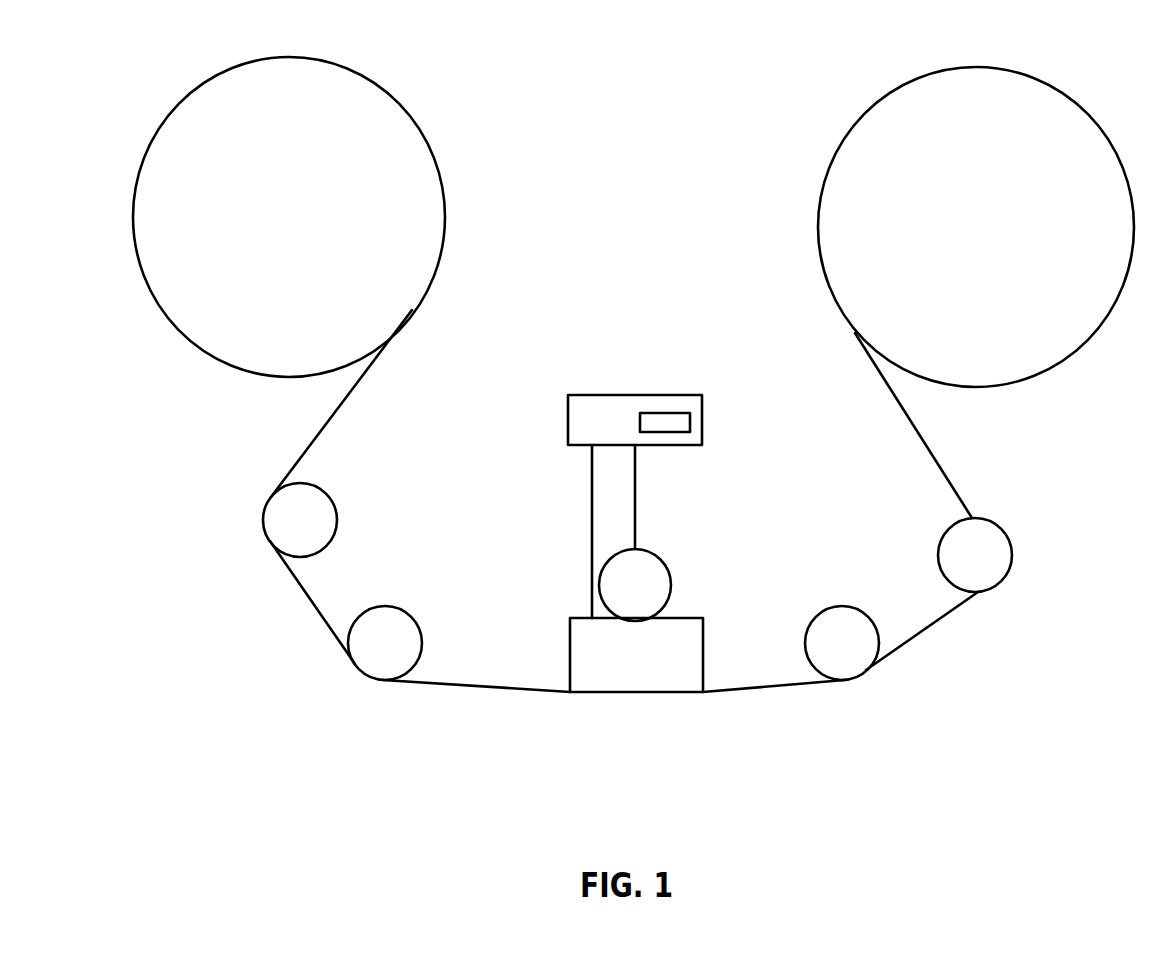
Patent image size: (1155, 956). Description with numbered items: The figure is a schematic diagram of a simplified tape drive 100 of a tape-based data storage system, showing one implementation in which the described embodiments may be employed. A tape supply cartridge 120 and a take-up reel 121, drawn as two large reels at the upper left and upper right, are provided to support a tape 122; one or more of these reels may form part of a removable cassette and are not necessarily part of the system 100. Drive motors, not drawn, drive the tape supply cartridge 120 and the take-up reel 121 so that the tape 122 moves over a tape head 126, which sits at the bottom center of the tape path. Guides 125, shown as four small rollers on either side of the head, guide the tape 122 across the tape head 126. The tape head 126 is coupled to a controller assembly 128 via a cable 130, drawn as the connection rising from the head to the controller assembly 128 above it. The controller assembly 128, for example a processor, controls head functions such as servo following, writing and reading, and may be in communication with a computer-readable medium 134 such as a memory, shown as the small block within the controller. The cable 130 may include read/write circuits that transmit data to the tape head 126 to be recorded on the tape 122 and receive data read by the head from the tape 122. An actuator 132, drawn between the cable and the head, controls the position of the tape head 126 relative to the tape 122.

The tape drive 100 is at (238, 433).
The tape supply cartridge 120 is at (443, 183).
The take-up reel 121 is at (1073, 355).
The tape 122 is at (481, 687).
The guides 125 is at (385, 607).
The tape head 126 is at (706, 655).
The controller assembly 128 is at (633, 395).
The cable 130 is at (592, 580).
The actuator 132 is at (663, 557).
The computer-readable medium 134 is at (680, 413).